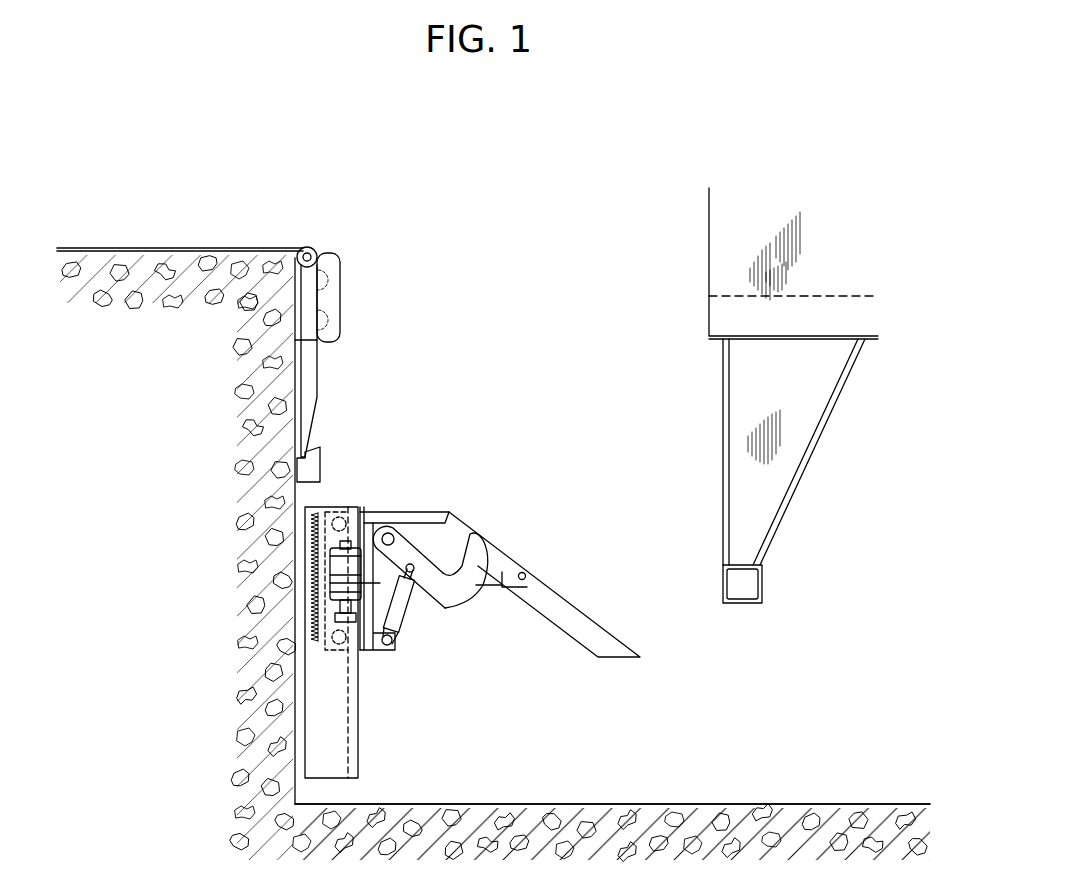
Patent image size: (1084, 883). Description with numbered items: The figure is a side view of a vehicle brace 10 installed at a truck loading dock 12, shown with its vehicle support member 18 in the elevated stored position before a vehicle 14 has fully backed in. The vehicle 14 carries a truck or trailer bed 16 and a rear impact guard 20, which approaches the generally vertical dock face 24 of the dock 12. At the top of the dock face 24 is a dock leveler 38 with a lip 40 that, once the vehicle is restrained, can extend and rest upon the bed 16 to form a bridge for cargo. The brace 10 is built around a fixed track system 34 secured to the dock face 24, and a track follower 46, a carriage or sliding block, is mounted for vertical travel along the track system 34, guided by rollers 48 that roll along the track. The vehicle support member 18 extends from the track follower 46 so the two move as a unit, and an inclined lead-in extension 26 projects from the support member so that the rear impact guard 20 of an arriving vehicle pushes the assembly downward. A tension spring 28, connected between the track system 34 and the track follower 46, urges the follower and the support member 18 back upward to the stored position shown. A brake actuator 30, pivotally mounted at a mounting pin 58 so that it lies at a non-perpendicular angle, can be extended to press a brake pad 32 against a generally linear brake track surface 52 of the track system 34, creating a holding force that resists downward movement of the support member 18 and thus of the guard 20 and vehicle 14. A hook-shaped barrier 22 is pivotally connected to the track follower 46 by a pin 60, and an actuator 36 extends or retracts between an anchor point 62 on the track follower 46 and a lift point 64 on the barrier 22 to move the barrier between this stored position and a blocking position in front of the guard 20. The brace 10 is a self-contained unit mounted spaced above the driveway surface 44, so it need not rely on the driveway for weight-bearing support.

The vehicle brace 10 is at (538, 408).
The truck loading dock 12 is at (560, 740).
The vehicle 14 is at (707, 248).
The truck or trailer bed 16 is at (836, 296).
The vehicle support member 18 is at (446, 511).
The rear impact guard 20 is at (723, 585).
The barrier 22 is at (470, 598).
The dock face 24 is at (299, 362).
The inclined lead-in extension 26 is at (512, 557).
The tension spring 28 is at (317, 645).
The brake actuator 30 is at (330, 567).
The brake pad 32 is at (335, 616).
The fixed track system 34 is at (358, 762).
The actuator 36 is at (401, 607).
The dock leveler 38 is at (173, 248).
The lip 40 is at (318, 390).
The driveway surface 44 is at (638, 804).
The track follower 46 is at (339, 516).
The rollers 48 is at (340, 658).
The brake track surface 52 is at (327, 722).
The mounting pin 58 is at (338, 549).
The pin 60 is at (387, 533).
The anchor point 62 is at (395, 644).
The lift point 64 is at (410, 563).